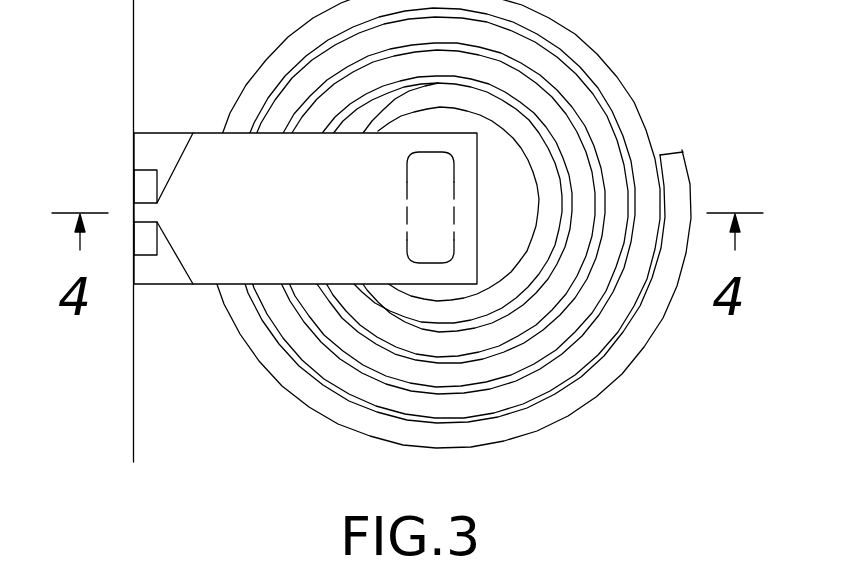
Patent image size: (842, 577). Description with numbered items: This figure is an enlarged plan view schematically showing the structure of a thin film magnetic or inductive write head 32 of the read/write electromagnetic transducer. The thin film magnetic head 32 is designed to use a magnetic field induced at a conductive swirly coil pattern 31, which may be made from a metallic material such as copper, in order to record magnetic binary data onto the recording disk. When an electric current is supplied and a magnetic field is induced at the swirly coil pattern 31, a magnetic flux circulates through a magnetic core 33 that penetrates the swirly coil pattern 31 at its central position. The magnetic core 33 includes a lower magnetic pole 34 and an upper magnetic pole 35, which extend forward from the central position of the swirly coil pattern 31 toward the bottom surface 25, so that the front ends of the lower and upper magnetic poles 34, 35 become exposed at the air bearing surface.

The bottom surface 25 is at (131, 41).
The swirly coil pattern 31 is at (599, 55).
The thin film magnetic head 32 is at (654, 389).
The magnetic core 33 is at (213, 322).
The lower magnetic pole 34 is at (143, 275).
The upper magnetic pole 35 is at (209, 136).